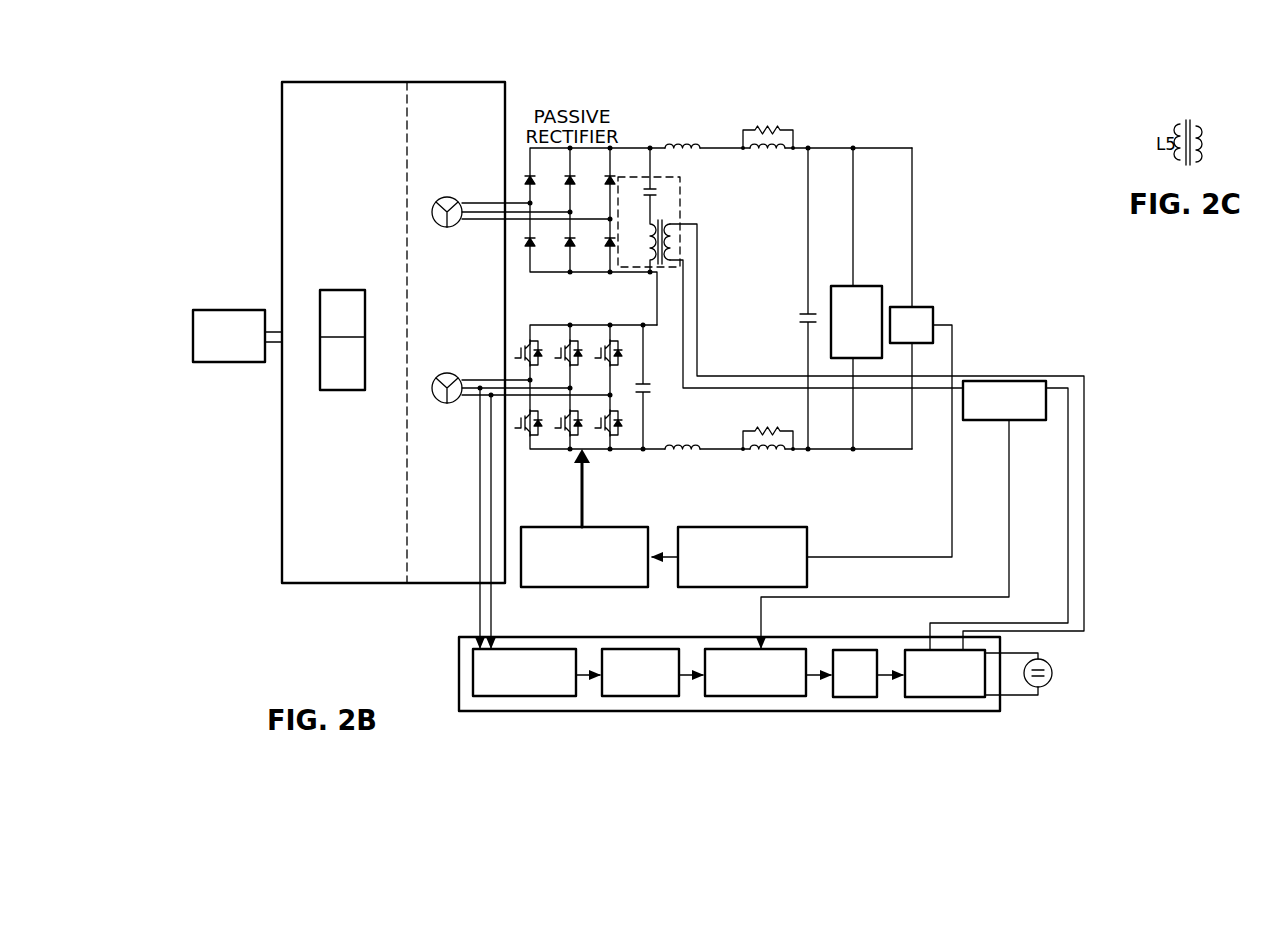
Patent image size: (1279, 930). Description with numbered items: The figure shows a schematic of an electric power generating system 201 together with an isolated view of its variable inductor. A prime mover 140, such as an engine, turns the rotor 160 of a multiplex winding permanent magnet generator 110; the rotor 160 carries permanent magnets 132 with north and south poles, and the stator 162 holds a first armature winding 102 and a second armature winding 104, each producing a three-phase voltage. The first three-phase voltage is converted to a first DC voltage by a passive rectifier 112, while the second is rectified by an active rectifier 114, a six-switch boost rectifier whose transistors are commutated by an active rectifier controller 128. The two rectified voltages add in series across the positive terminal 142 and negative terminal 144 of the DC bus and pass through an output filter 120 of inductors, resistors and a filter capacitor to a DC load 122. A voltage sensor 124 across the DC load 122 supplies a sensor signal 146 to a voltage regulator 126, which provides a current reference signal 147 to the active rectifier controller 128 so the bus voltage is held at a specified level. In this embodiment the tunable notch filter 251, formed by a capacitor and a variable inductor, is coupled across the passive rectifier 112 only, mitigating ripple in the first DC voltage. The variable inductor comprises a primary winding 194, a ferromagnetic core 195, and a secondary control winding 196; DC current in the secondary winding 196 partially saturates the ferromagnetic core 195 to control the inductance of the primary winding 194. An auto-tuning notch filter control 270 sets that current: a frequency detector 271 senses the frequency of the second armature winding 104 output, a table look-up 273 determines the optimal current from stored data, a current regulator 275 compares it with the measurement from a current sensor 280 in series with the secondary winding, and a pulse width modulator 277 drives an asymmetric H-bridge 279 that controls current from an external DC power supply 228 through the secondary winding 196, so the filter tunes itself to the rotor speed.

In FIG. 2B, the permanent magnet generator 110 is at (478, 82).
In FIG. 2B, the first armature winding 102 is at (437, 228).
In FIG. 2B, the second armature winding 104 is at (437, 403).
In FIG. 2B, the passive rectifier 112 is at (512, 226).
In FIG. 2B, the active rectifier 114 is at (548, 457).
In FIG. 2B, the output filter 120 is at (813, 130).
In FIG. 2B, the DC load 122 is at (876, 286).
In FIG. 2B, the voltage sensor 124 is at (928, 336).
In FIG. 2B, the voltage regulator 126 is at (808, 540).
In FIG. 2B, the active rectifier controller 128 is at (550, 590).
In FIG. 2B, the permanent magnets 132 is at (342, 390).
In FIG. 2B, the prime mover 140 is at (247, 310).
In FIG. 2B, the positive terminal 142 is at (661, 118).
In FIG. 2B, the negative terminal 144 is at (652, 458).
In FIG. 2B, the sensor signal 146 is at (883, 557).
In FIG. 2B, the current reference signal 147 is at (668, 556).
In FIG. 2B, the rotor 160 is at (366, 566).
In FIG. 2B, the stator 162 is at (476, 566).
In FIG. 2B, the electric power generating system 201 is at (896, 92).
In FIG. 2B, the tunable notch filter 251 is at (680, 103).
In FIG. 2B, the auto-tuning notch filter control 270 is at (722, 637).
In FIG. 2B, the frequency detector 271 is at (504, 697).
In FIG. 2B, the table look-up 273 is at (638, 697).
In FIG. 2B, the current regulator 275 is at (760, 697).
In FIG. 2B, the pulse width modulator 277 is at (852, 697).
In FIG. 2B, the asymmetric H-bridge 279 is at (908, 697).
In FIG. 2B, the current sensor 280 is at (973, 422).
In FIG. 2B, the external DC power supply 228 is at (1052, 677).
In FIG. 2C, the primary winding 194 is at (1180, 160).
In FIG. 2C, the ferromagnetic core 195 is at (1180, 124).
In FIG. 2C, the secondary winding 196 is at (1196, 128).